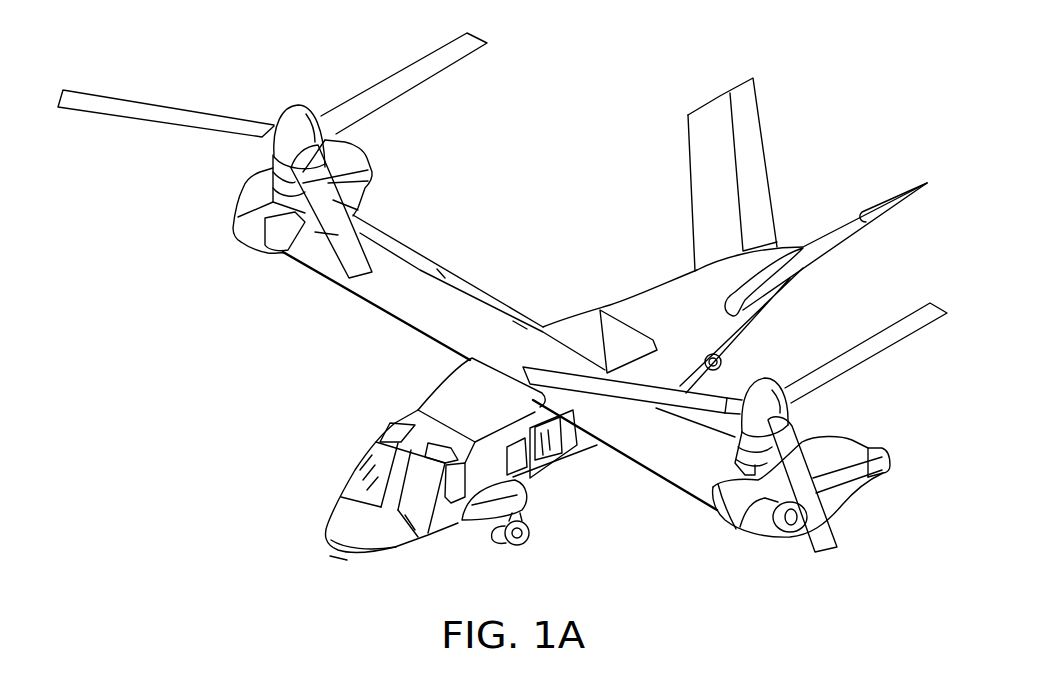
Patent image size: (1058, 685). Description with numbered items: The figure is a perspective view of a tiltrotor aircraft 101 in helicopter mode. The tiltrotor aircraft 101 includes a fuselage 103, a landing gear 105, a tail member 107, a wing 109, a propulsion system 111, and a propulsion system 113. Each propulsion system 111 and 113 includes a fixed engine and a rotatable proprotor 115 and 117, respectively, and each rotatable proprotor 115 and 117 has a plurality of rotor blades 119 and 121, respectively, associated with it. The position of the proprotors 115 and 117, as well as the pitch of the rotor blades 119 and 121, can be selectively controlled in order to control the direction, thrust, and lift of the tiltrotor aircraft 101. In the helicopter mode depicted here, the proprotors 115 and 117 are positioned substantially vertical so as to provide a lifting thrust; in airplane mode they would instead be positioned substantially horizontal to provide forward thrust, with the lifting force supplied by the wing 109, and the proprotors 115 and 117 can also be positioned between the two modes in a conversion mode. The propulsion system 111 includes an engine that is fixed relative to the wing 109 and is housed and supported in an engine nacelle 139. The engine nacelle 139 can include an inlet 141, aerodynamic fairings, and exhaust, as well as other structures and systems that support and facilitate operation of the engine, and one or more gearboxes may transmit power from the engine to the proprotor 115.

The tiltrotor aircraft 101 is at (860, 58).
The fuselage 103 is at (380, 560).
The landing gear 105 is at (517, 547).
The tail member 107 is at (770, 165).
The wing 109 is at (647, 470).
The propulsion system 111 is at (745, 555).
The propulsion system 113 is at (231, 159).
The rotatable proprotor 115 is at (790, 418).
The rotatable proprotor 117 is at (301, 103).
The rotor blades 119 is at (893, 347).
The rotor blades 121 is at (415, 62).
The engine nacelle 139 is at (857, 508).
The inlet 141 is at (780, 532).